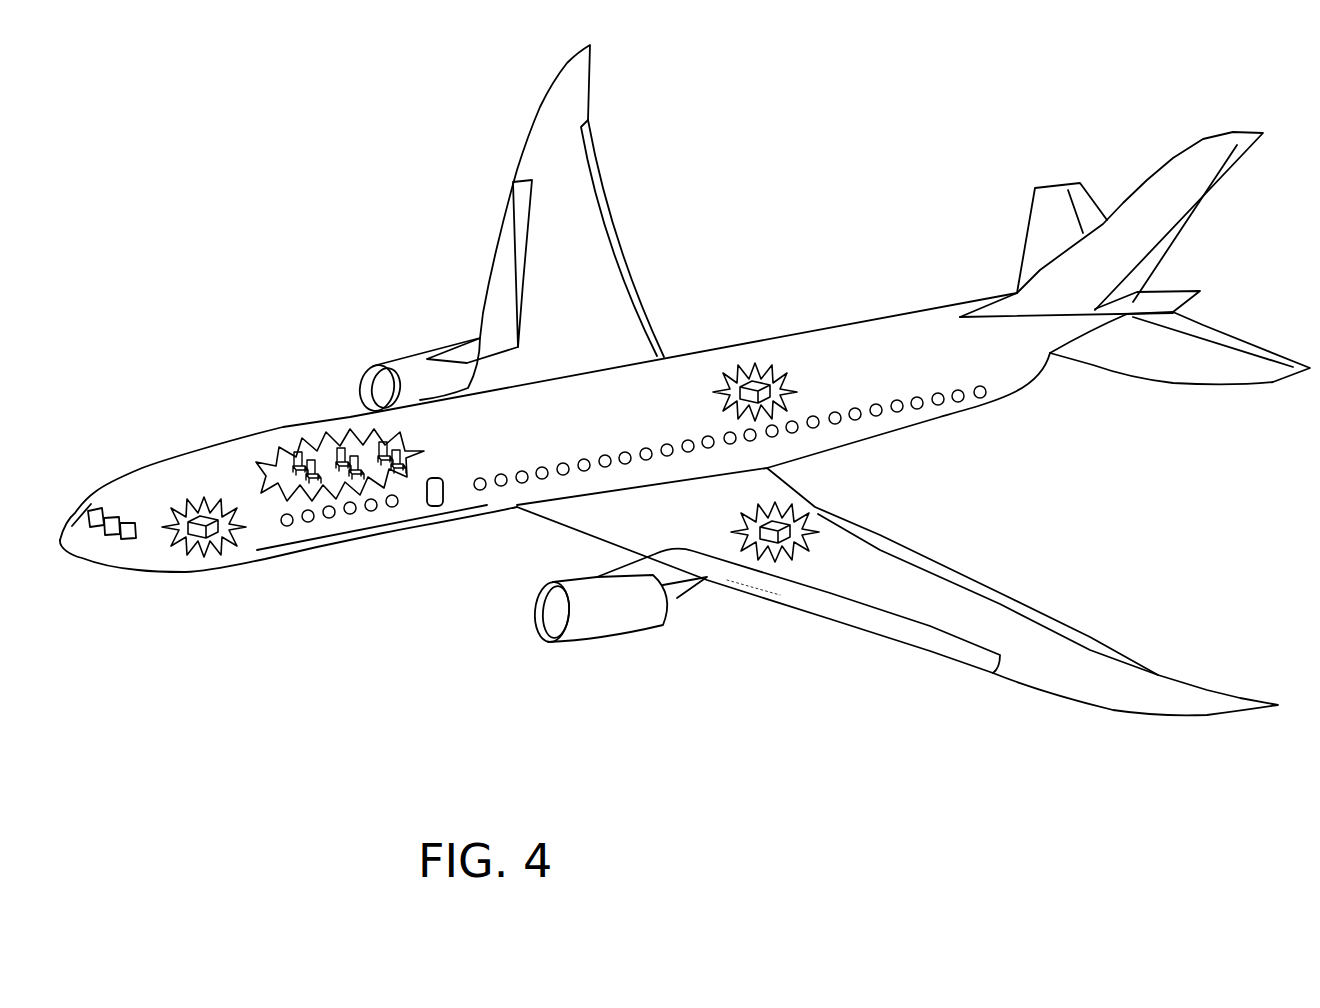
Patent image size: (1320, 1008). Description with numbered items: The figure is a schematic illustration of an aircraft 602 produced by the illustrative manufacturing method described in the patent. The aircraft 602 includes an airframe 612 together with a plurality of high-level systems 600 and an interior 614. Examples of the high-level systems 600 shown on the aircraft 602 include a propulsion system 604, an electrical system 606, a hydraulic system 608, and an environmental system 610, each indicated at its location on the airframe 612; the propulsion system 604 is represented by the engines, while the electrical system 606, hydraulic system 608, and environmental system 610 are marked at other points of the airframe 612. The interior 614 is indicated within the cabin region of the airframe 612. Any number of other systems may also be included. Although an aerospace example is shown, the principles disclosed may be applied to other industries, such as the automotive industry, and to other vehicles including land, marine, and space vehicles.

The high-level systems 600 is at (685, 380).
The aircraft 602 is at (286, 219).
The propulsion system 604 is at (413, 368).
The electrical system 606 is at (203, 507).
The hydraulic system 608 is at (774, 526).
The environmental system 610 is at (757, 387).
The airframe 612 is at (322, 437).
The interior 614 is at (320, 478).